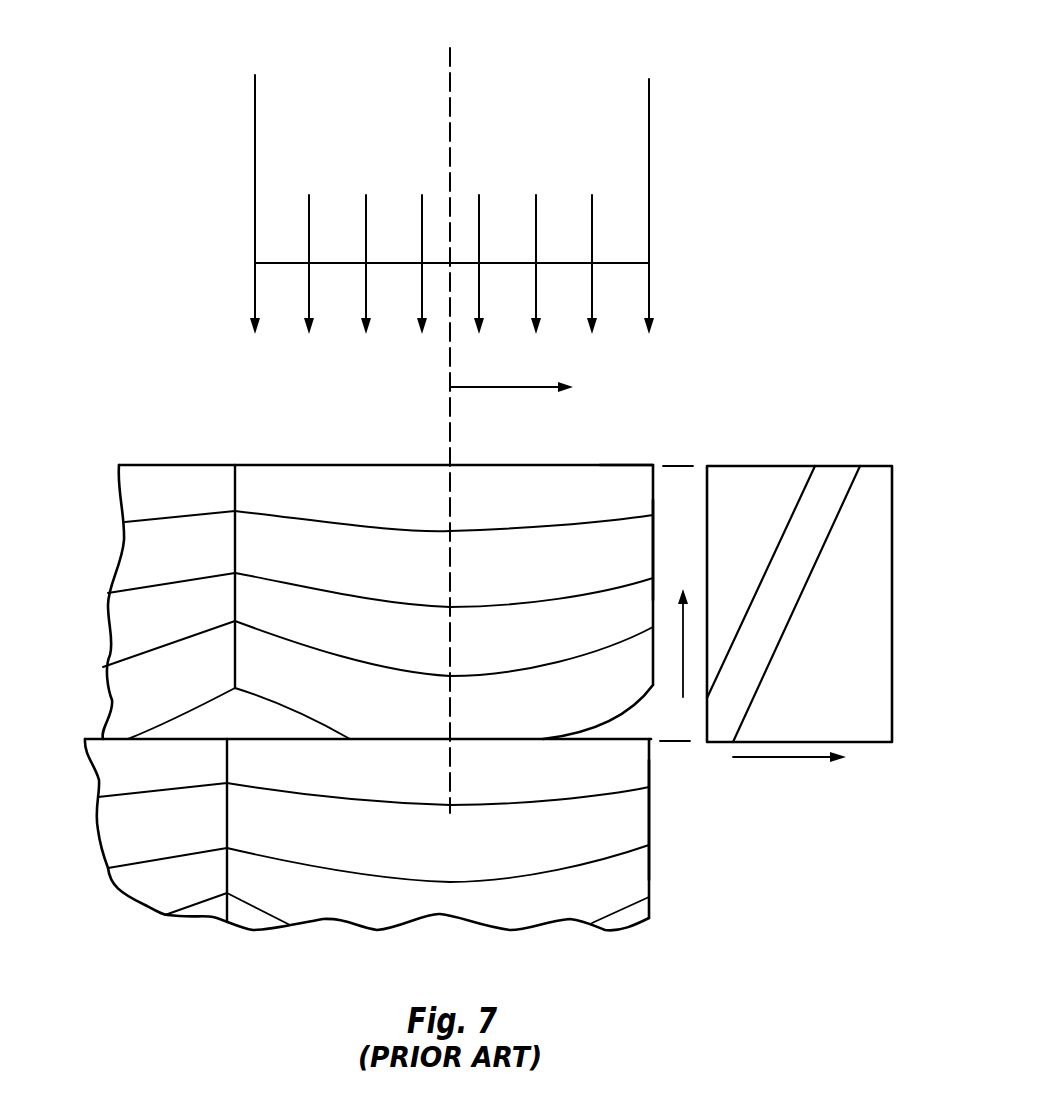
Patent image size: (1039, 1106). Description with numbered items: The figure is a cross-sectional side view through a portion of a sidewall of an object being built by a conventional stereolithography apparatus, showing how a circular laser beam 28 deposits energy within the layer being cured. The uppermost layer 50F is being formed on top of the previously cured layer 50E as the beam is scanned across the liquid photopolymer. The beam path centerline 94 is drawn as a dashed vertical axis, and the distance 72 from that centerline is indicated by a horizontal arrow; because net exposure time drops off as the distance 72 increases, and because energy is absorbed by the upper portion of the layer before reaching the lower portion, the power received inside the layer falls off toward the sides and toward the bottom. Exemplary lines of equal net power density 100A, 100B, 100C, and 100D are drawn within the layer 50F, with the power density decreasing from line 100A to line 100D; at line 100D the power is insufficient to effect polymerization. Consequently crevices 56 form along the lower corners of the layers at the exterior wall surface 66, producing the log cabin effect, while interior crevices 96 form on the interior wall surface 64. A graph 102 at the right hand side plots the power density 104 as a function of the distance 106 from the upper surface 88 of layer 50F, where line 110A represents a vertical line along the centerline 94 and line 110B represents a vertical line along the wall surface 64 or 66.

The laser beam 28 is at (649, 170).
The beam path centerline 94 is at (450, 130).
The distance 72 is at (545, 390).
The uppermost layer 50F is at (418, 544).
The layer 50E is at (396, 866).
The interior wall surface 64 is at (235, 487).
The line of equal net power density 100A is at (285, 517).
The line of equal net power density 100B is at (329, 598).
The line of equal net power density 100C is at (402, 670).
The line of equal net power density 100D is at (580, 726).
The upper surface 88 is at (637, 465).
The exterior wall surface 66 is at (655, 532).
The interior crevice 96 is at (197, 739).
The crevice 56 is at (605, 740).
The graph 102 is at (799, 559).
The line along centerline 110A is at (775, 655).
The line along wall surface 110B is at (757, 590).
The distance 106 is at (683, 652).
The power density 104 is at (787, 757).